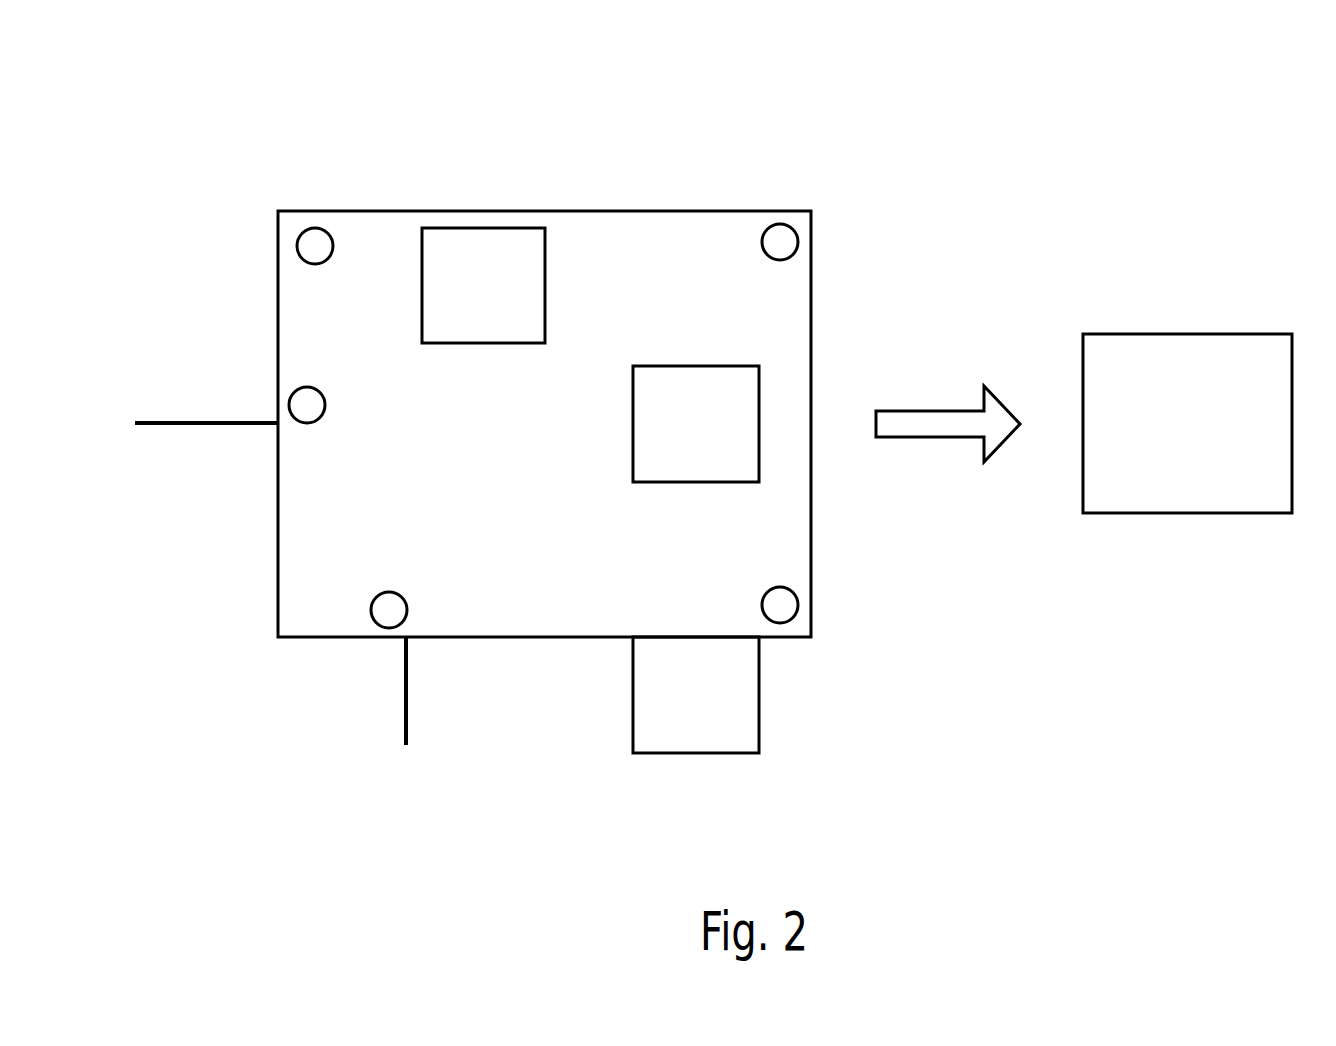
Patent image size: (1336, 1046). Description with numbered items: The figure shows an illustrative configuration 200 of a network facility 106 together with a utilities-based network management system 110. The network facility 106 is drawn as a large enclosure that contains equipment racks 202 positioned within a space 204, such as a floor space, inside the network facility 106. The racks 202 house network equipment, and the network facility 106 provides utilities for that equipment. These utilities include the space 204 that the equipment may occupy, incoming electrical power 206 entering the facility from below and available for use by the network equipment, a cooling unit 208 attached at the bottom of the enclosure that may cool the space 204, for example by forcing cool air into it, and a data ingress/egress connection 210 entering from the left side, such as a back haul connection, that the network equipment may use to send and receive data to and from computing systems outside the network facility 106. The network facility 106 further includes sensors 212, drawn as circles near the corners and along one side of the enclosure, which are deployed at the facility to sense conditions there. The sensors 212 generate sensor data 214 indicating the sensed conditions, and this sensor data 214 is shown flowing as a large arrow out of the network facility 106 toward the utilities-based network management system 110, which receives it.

The configuration 200 is at (200, 98).
The network facility 106 is at (330, 210).
The space 204 is at (594, 247).
The equipment rack 202 is at (590, 355).
The cooling unit 208 is at (696, 695).
The sensor 212 is at (297, 247).
The data ingress/egress connection 210 is at (153, 421).
The incoming electrical power 206 is at (404, 718).
The sensor data 214 is at (900, 410).
The utilities-based network management system 110 is at (1187, 423).